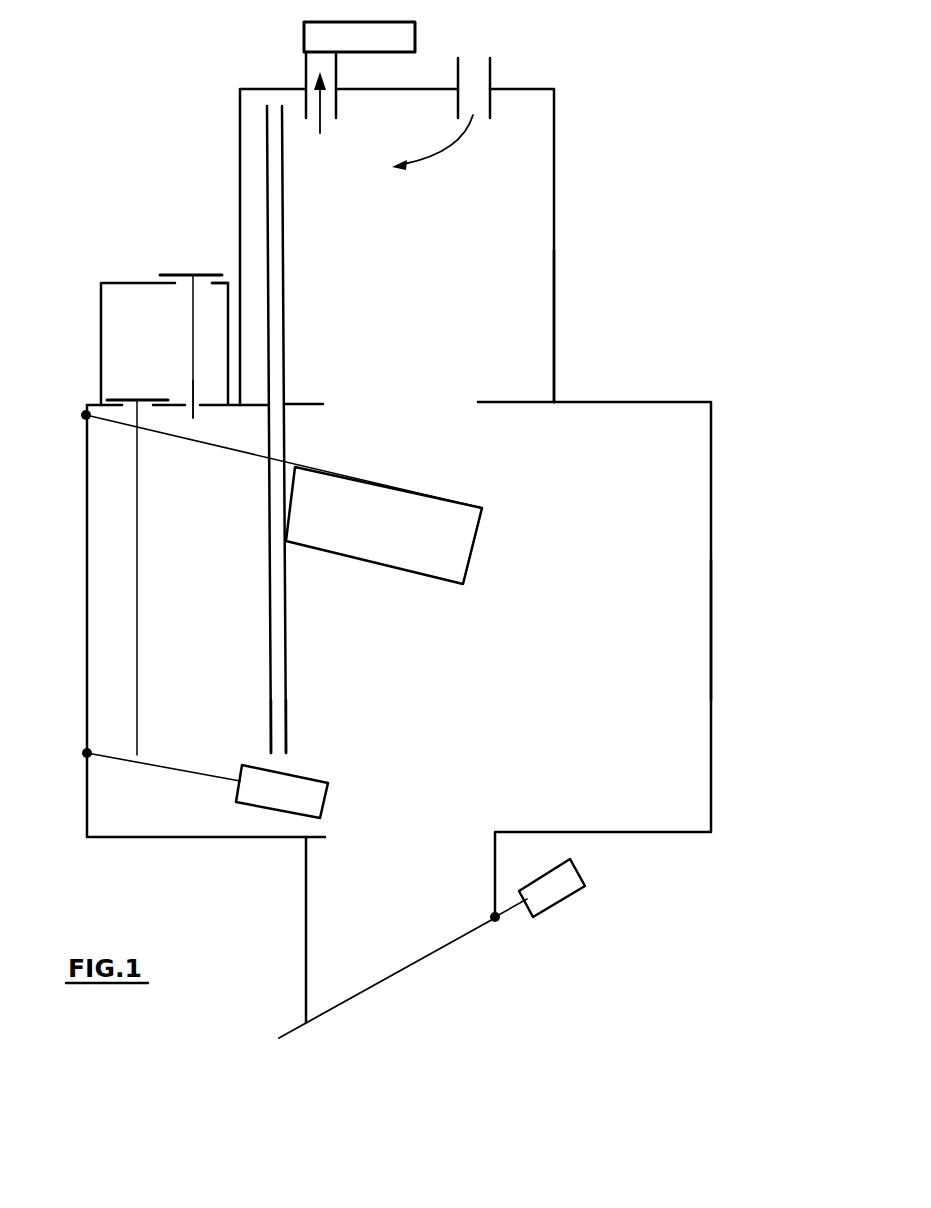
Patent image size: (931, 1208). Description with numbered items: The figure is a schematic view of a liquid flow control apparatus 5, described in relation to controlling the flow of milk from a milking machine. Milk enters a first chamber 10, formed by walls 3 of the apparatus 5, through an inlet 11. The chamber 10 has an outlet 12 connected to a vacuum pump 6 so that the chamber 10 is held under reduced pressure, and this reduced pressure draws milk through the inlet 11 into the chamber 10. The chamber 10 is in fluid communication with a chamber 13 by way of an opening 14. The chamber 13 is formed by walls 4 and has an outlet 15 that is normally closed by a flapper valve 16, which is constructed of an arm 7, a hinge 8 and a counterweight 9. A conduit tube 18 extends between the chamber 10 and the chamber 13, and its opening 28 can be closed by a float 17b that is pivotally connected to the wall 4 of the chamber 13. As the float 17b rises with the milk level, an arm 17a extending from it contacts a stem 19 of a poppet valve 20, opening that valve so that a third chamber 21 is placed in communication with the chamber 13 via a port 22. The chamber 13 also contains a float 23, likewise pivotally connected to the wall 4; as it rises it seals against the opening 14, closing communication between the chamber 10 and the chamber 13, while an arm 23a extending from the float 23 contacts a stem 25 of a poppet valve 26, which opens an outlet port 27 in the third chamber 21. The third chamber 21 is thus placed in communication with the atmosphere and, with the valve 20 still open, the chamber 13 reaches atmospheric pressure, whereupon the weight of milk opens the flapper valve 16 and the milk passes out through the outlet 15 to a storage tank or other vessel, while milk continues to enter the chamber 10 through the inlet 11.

The walls 3 is at (555, 200).
The walls 4 is at (711, 495).
The liquid flow control apparatus 5 is at (756, 425).
The vacuum pump 6 is at (372, 42).
The arm 7 is at (332, 1012).
The hinge 8 is at (500, 922).
The counterweight 9 is at (560, 890).
The first chamber 10 is at (530, 332).
The inlet 11 is at (493, 67).
The outlet 12 is at (305, 60).
The chamber 13 is at (688, 623).
The opening 14 is at (455, 412).
The outlet 15 is at (330, 903).
The flapper valve 16 is at (458, 1008).
The arm 17a is at (177, 772).
The float 17b is at (267, 793).
The conduit tube 18 is at (286, 688).
The stem 19 is at (136, 665).
The poppet valve 20 is at (118, 400).
The third chamber 21 is at (100, 328).
The port 22 is at (123, 422).
The float 23 is at (457, 522).
The arm 23a is at (253, 462).
The stem 25 is at (195, 413).
The poppet valve 26 is at (180, 273).
The outlet port 27 is at (185, 283).
The opening 28 is at (280, 757).